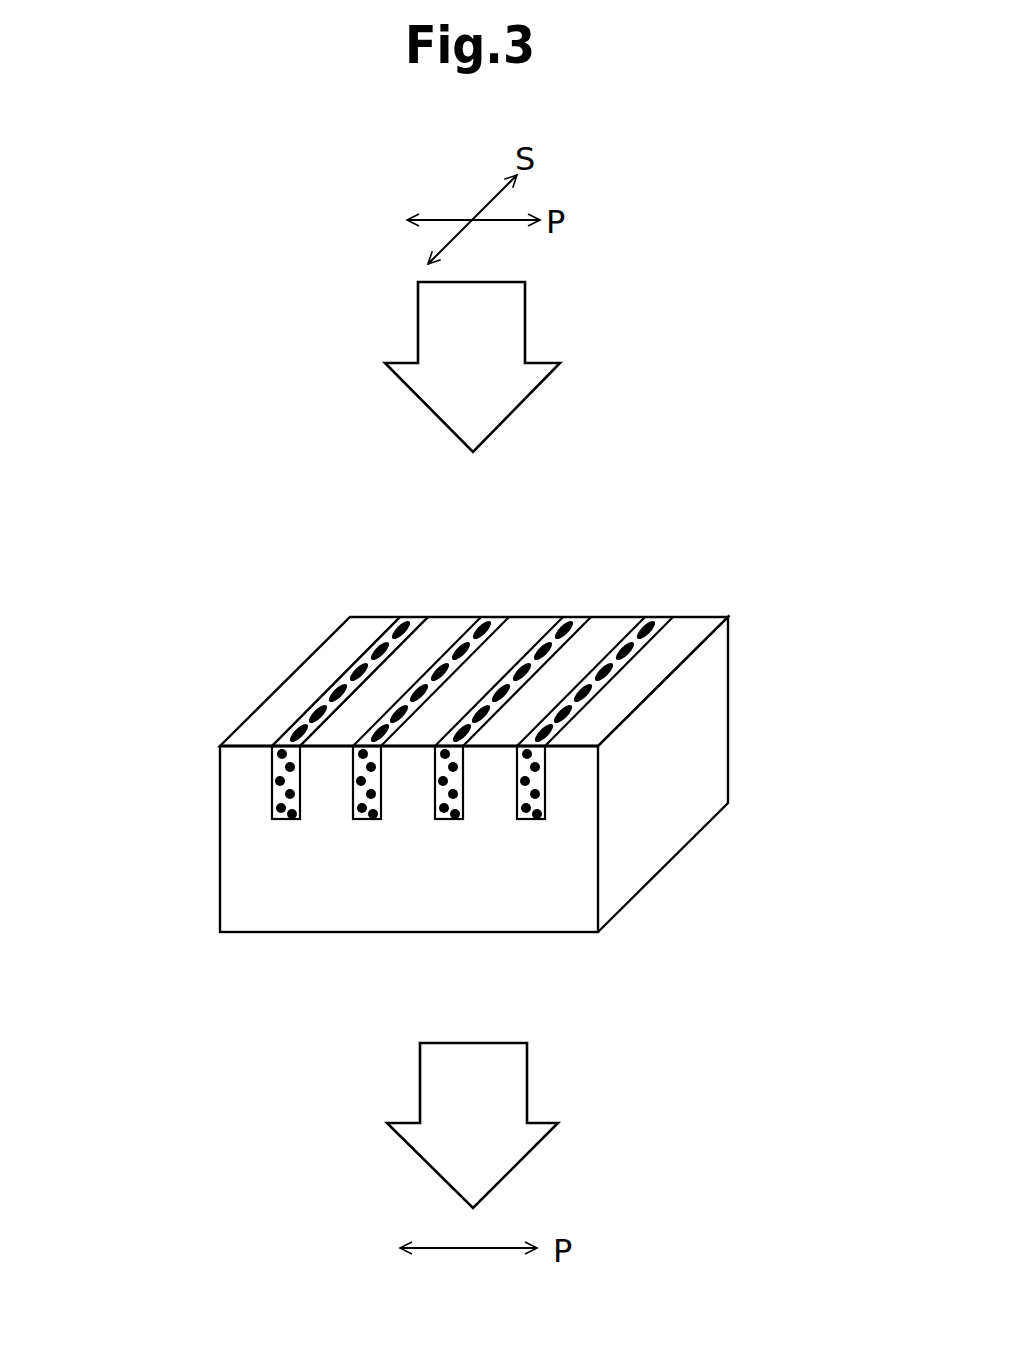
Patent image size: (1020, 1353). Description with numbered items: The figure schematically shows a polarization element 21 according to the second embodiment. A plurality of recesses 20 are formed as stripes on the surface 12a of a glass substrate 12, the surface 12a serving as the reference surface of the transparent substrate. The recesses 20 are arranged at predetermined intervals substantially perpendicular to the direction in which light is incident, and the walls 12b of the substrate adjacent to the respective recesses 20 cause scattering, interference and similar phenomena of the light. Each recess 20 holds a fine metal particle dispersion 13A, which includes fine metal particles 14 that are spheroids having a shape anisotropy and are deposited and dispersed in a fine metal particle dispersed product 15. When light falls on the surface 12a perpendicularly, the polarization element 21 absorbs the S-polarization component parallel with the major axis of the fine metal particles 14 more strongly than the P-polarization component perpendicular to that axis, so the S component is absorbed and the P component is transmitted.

The polarization element 21 is at (690, 533).
The glass substrate 12 is at (232, 851).
The surface 12a is at (238, 742).
The walls 12b is at (267, 738).
The fine metal particle dispersion 13A is at (496, 613).
The fine metal particles 14 is at (377, 643).
The fine metal particle dispersed product 15 is at (338, 678).
The recesses 20 is at (294, 821).